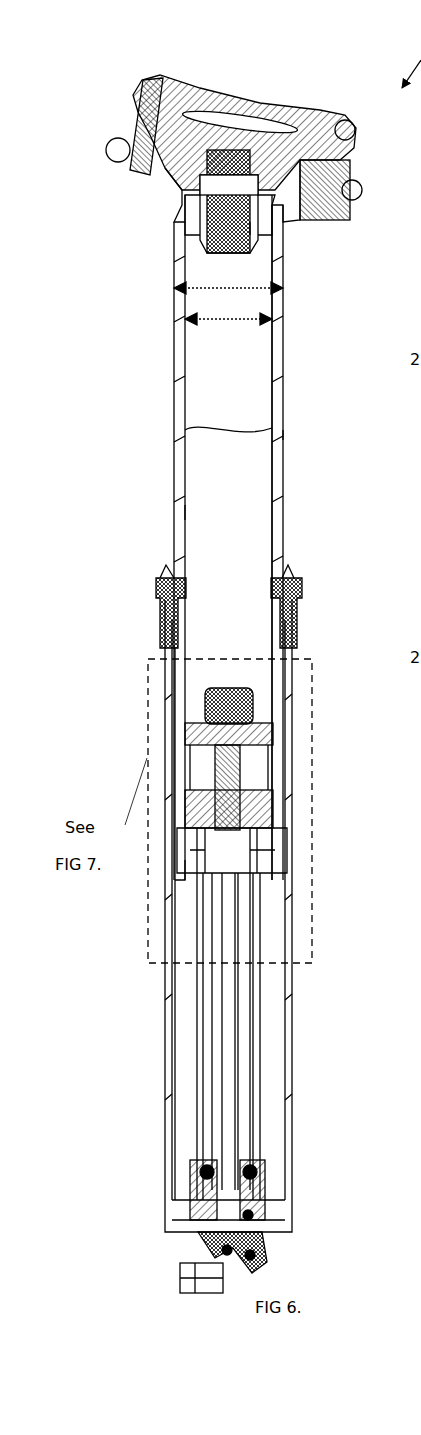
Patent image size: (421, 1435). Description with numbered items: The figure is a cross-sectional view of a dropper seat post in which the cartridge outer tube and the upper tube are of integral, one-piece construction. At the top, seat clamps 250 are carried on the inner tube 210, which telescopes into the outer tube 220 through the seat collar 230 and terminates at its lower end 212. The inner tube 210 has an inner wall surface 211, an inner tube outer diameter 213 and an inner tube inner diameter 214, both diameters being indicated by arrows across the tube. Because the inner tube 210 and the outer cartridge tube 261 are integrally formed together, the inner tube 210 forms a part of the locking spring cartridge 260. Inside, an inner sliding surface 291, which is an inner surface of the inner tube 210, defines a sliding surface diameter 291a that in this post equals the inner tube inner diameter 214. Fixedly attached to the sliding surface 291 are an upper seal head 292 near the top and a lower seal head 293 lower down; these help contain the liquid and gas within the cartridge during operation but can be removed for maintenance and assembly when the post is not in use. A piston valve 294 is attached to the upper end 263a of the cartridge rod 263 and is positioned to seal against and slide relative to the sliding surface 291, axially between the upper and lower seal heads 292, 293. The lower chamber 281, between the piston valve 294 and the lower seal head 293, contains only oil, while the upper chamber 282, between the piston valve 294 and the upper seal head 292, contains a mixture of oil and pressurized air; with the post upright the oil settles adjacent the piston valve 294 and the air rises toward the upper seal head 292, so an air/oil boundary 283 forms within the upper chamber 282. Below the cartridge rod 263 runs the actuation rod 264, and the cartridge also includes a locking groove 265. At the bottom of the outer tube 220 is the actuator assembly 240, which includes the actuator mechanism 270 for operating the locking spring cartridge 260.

The seat clamps 250 is at (140, 95).
The inner tube 210 is at (169, 542).
The outer cartridge tube 261 is at (172, 242).
The upper seal head 292 is at (262, 222).
The inner tube outer diameter 213 is at (205, 290).
The sliding surface diameter 291a is at (232, 321).
The inner tube inner diameter 214 is at (174, 349).
The inner wall surface 211 is at (338, 542).
The inner sliding surface 291 is at (272, 375).
The locking spring cartridge 260 is at (295, 433).
The air/oil boundary 283 is at (225, 428).
The upper chamber 282 is at (213, 510).
The seat collar 230 is at (300, 580).
The piston valve 294 is at (258, 725).
The lower chamber 281 is at (196, 770).
The upper end of cartridge rod 263a is at (246, 760).
The lower seal head 293 is at (272, 812).
The outer tube 220 is at (293, 876).
The lower end 212 is at (170, 880).
The cartridge rod 263 is at (248, 960).
The actuation rod 264 is at (234, 1068).
The locking groove 265 is at (252, 1165).
The actuator assembly 240 is at (180, 1280).
The actuator mechanism 270 is at (267, 1265).